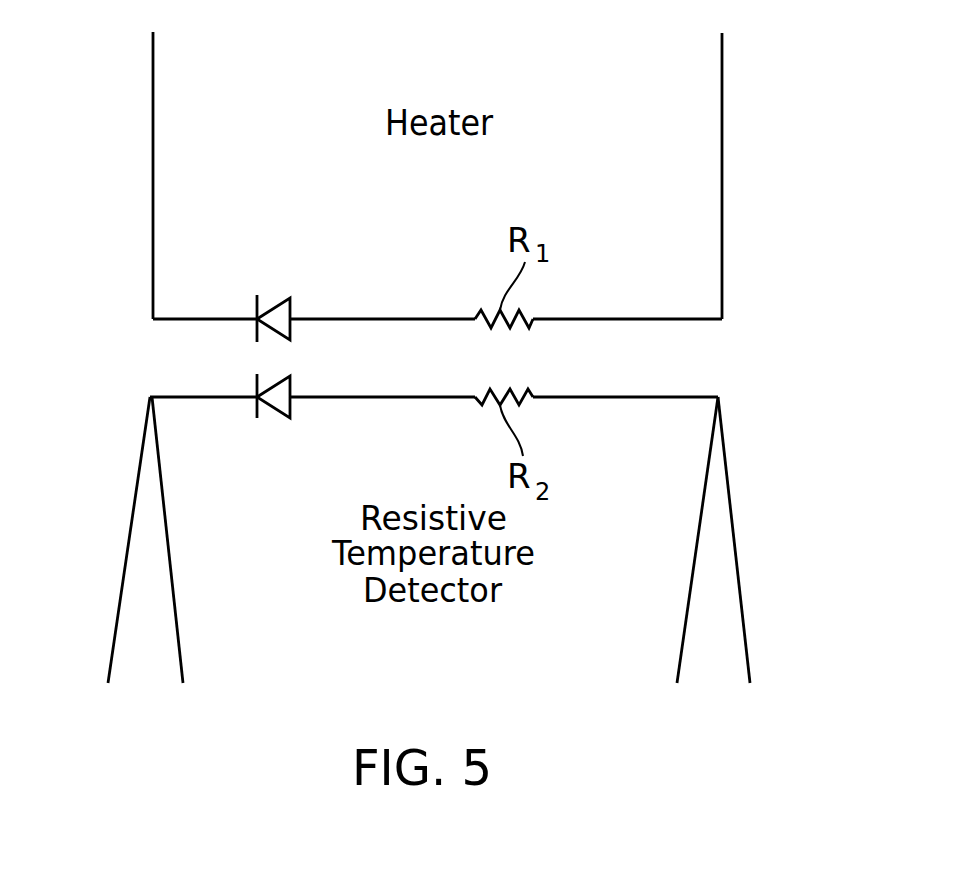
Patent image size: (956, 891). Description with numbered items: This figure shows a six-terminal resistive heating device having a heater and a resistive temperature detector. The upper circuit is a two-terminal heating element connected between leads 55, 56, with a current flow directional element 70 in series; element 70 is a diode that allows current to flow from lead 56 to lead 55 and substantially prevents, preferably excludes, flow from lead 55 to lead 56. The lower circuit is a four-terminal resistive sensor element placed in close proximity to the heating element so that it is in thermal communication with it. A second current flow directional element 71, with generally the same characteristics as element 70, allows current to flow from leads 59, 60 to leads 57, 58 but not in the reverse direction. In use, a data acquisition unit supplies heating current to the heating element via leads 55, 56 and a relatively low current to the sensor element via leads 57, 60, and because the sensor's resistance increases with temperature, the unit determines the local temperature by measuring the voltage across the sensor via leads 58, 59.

The lead 55 is at (153, 110).
The lead 56 is at (722, 106).
The lead 57 is at (118, 602).
The lead 58 is at (177, 625).
The lead 59 is at (683, 633).
The lead 60 is at (743, 610).
The current flow directional element 70 is at (274, 308).
The current flow directional element 71 is at (273, 417).